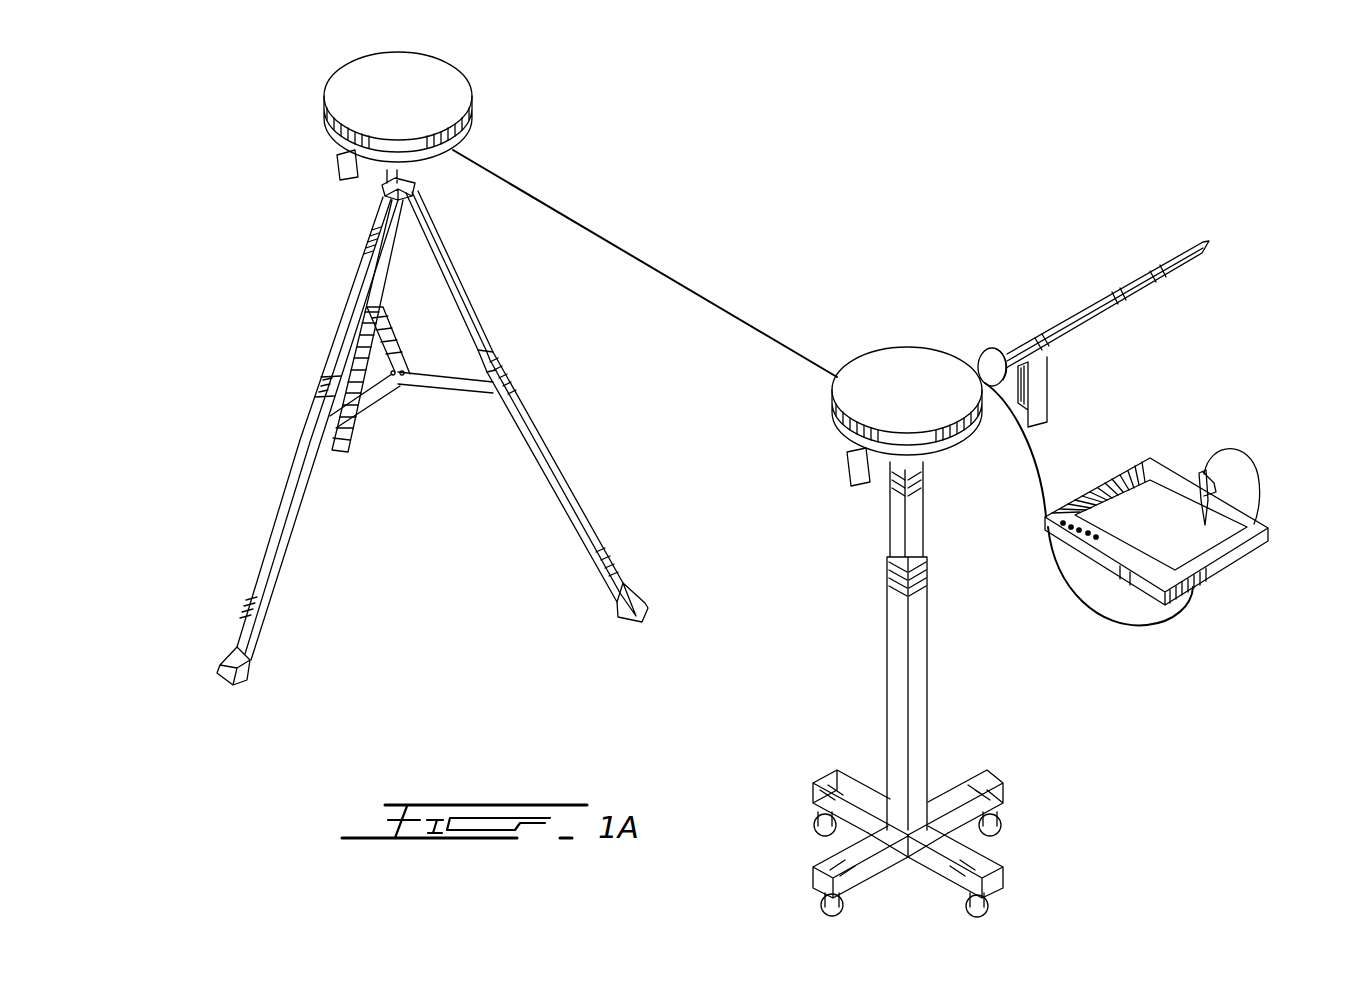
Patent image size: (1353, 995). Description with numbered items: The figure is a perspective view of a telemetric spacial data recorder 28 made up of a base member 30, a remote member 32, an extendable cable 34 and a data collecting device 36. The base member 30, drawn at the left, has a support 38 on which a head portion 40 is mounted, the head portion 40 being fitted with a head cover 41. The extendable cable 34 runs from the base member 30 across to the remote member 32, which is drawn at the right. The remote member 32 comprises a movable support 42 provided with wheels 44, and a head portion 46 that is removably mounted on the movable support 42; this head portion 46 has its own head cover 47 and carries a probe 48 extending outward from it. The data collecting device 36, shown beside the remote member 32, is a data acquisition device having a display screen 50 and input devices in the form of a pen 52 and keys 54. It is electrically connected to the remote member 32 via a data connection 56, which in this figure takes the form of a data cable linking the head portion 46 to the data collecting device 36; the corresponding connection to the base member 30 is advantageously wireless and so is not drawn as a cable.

The telemetric spacial data recorder 28 is at (826, 158).
The base member 30 is at (292, 220).
The remote member 32 is at (850, 594).
The extendable cable 34 is at (672, 273).
The data collecting device 36 is at (1155, 437).
The support 38 is at (544, 418).
The head portion 40 is at (472, 92).
The head cover 41 is at (478, 108).
The movable support 42 is at (936, 672).
The wheels 44 is at (1003, 901).
The head portion 46 is at (919, 342).
The head cover 47 is at (871, 363).
The probe 48 is at (1072, 302).
The display screen 50 is at (1162, 492).
The pen 52 is at (1214, 491).
The keys 54 is at (1047, 527).
The data connection 56 is at (1035, 453).